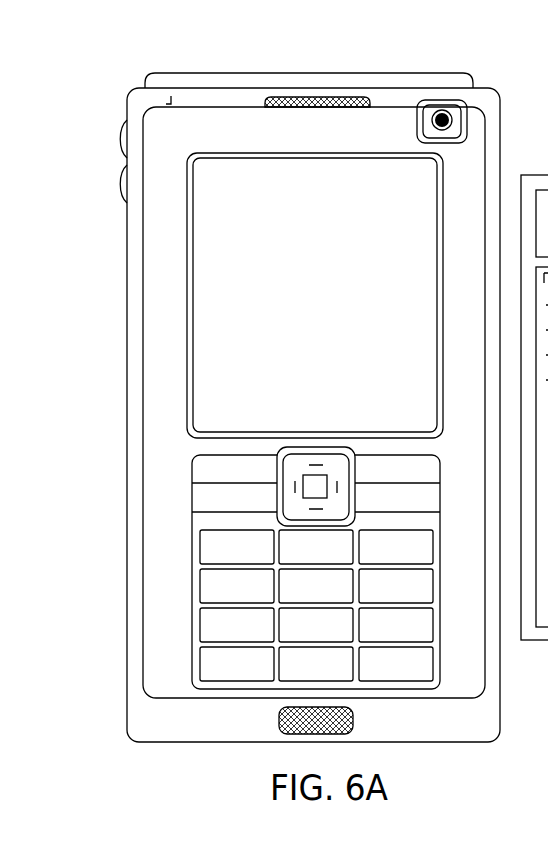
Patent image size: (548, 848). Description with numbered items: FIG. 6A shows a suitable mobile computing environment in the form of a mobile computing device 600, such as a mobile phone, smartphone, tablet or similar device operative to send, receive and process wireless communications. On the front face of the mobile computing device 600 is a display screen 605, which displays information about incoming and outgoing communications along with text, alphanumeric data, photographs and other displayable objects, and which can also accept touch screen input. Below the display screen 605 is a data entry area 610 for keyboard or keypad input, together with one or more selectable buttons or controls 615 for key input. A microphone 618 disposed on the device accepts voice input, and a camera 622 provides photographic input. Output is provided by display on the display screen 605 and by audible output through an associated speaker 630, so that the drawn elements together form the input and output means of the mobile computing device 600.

The mobile computing device 600 is at (120, 92).
The display screen 605 is at (220, 280).
The data entry area 610 is at (190, 493).
The selectable buttons or controls 615 is at (212, 585).
The microphone 618 is at (279, 723).
The camera 622 is at (445, 118).
The speaker 630 is at (321, 105).